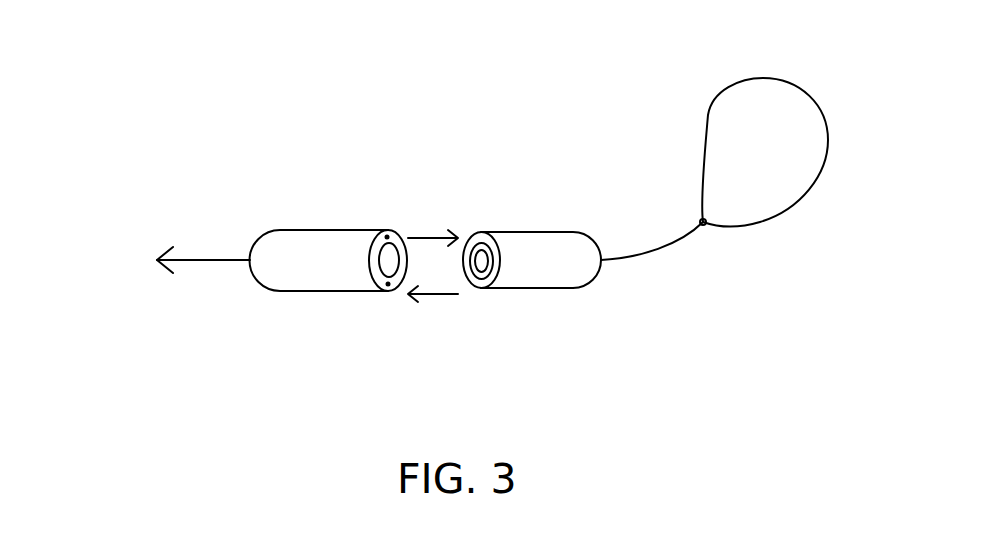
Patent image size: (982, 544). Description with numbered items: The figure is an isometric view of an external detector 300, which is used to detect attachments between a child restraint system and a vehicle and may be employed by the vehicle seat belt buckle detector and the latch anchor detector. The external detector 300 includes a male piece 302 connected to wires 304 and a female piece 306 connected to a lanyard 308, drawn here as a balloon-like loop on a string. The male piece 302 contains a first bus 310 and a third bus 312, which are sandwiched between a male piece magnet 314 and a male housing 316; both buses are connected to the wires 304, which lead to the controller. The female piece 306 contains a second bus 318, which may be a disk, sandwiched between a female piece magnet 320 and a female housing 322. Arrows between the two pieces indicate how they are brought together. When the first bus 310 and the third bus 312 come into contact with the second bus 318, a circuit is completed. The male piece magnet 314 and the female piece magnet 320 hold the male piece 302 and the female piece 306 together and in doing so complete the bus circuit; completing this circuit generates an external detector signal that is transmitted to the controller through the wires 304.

The external detector 300 is at (490, 80).
The male piece 302 is at (290, 286).
The wires 304 is at (202, 259).
The female piece 306 is at (580, 285).
The lanyard 308 is at (735, 228).
The first bus 310 is at (392, 233).
The third bus 312 is at (388, 286).
The male piece magnet 314 is at (386, 262).
The male housing 316 is at (298, 229).
The second bus 318 is at (478, 265).
The female piece magnet 320 is at (493, 250).
The female housing 322 is at (538, 288).